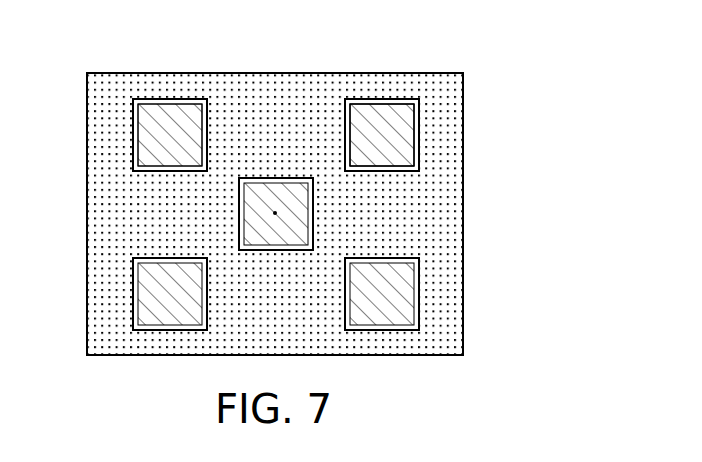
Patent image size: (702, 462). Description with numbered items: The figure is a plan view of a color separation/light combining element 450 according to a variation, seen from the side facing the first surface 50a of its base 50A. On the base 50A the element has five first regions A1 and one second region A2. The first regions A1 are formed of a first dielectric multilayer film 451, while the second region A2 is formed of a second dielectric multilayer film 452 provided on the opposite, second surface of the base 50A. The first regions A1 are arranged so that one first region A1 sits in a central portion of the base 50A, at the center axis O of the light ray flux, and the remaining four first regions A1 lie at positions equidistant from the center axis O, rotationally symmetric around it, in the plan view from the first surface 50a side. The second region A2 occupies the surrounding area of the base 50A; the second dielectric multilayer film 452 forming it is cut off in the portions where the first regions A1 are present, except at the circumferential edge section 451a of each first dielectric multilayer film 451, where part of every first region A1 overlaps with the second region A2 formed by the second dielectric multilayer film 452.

The color separation/light combining element 450 is at (470, 90).
The second dielectric multilayer film 452 is at (190, 100).
The second region A2 is at (195, 100).
The circumferential edge section 451a is at (385, 100).
The first dielectric multilayer film 451 is at (461, 135).
The first region A1 is at (392, 138).
The first surface 50a is at (438, 156).
The base 50A is at (463, 206).
The center axis O is at (276, 215).